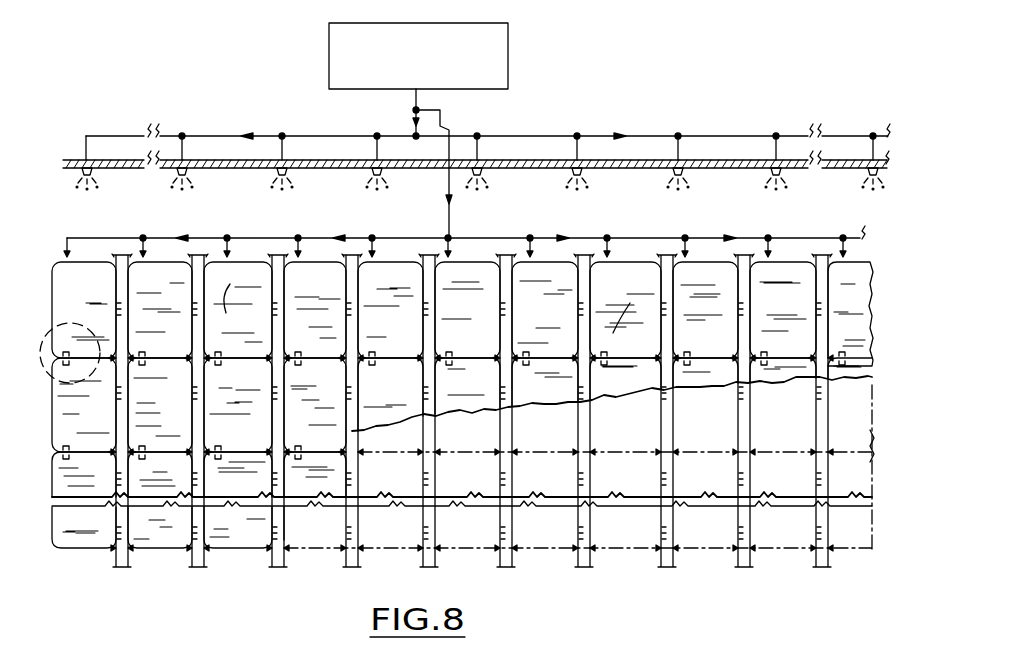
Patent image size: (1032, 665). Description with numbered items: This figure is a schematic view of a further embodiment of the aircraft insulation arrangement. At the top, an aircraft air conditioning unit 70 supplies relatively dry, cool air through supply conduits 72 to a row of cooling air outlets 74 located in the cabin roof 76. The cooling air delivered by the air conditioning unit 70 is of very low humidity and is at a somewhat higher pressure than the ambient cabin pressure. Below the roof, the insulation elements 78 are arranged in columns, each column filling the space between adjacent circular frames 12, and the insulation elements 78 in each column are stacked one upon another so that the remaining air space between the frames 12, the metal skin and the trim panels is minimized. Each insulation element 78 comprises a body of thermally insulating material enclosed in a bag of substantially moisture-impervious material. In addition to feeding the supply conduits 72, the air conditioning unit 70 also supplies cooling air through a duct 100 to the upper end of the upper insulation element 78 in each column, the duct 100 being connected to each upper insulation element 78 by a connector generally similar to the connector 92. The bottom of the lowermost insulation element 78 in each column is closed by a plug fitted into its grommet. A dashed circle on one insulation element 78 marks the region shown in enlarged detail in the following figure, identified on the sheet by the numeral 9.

The aircraft air conditioning unit 70 is at (508, 43).
The supply conduits 72 is at (528, 135).
The cooling air outlets 74 is at (170, 180).
The cabin roof 76 is at (413, 170).
The duct 100 is at (258, 237).
The insulation element 78 is at (292, 327).
The connector 92 is at (141, 349).
The circular frames 12 is at (196, 567).
The detail circle FIG. 9 is at (72, 384).